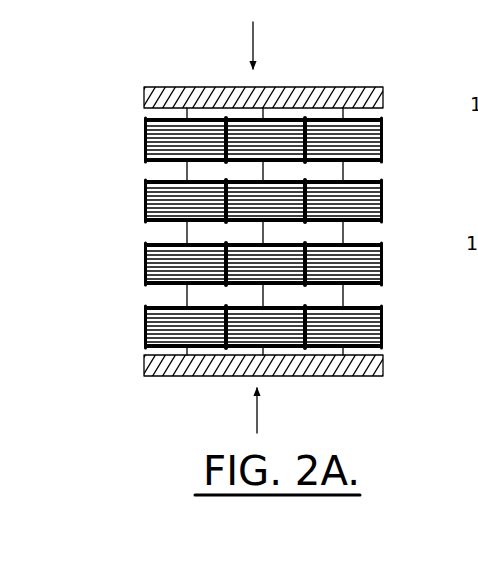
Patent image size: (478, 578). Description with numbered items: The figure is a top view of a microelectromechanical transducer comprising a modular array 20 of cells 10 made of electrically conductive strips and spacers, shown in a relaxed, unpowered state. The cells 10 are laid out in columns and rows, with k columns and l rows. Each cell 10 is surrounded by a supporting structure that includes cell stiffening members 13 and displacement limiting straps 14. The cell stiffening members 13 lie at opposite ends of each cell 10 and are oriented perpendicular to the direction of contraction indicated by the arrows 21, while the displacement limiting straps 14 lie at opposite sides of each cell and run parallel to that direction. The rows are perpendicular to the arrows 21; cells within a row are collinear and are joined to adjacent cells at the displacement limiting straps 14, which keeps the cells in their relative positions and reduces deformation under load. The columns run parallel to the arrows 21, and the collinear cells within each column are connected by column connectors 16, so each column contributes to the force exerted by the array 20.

The cell 10 is at (260, 225).
The cell stiffening member 13 is at (372, 119).
The displacement limiting strap 14 is at (325, 210).
The column connector 16 is at (263, 229).
The modular array 20 is at (132, 101).
The arrow 21 is at (253, 41).